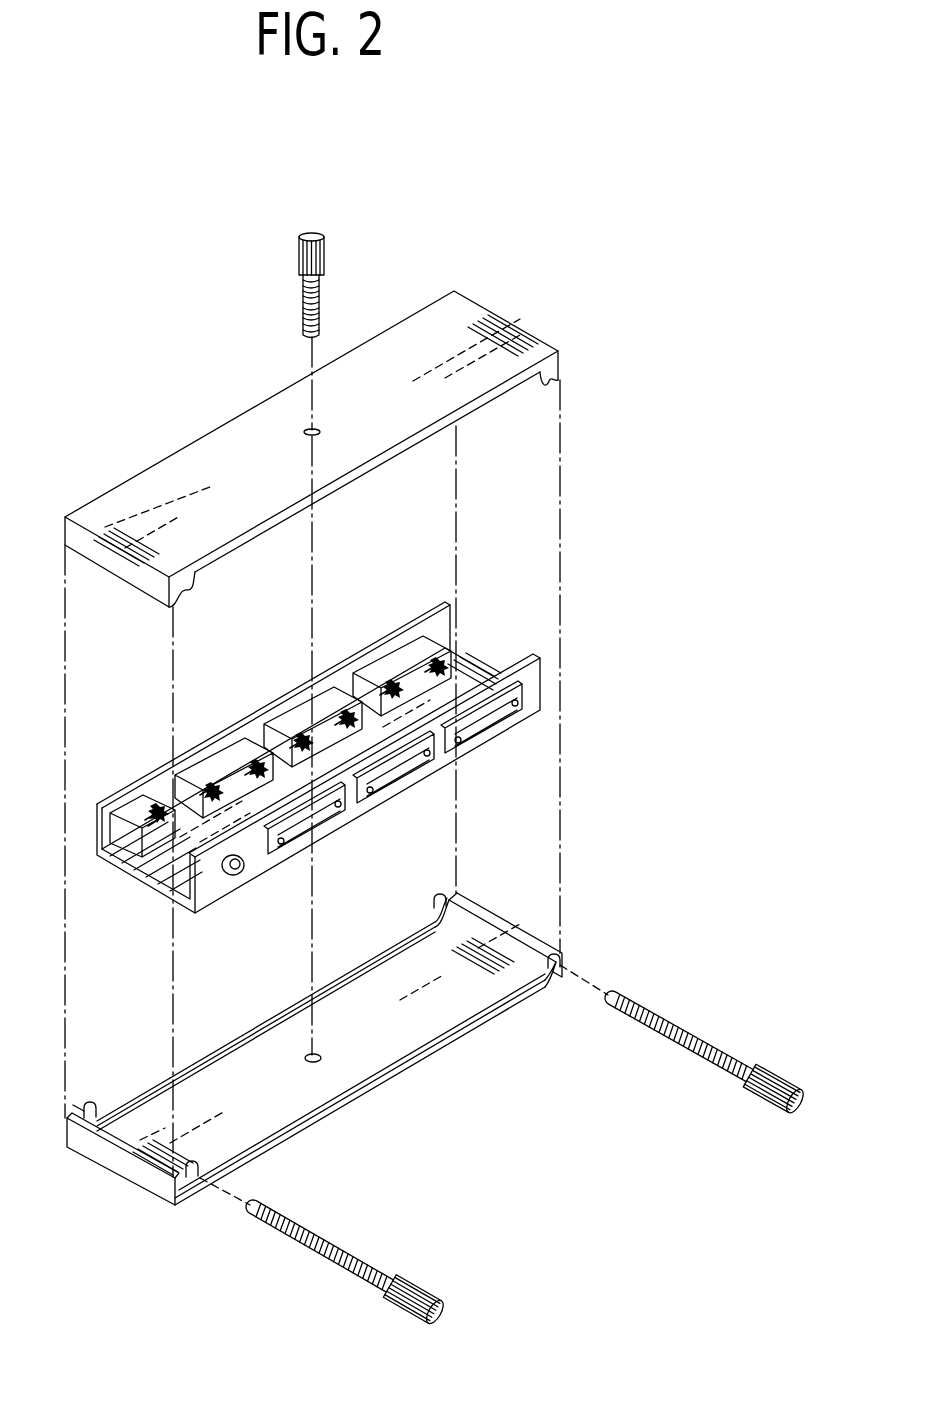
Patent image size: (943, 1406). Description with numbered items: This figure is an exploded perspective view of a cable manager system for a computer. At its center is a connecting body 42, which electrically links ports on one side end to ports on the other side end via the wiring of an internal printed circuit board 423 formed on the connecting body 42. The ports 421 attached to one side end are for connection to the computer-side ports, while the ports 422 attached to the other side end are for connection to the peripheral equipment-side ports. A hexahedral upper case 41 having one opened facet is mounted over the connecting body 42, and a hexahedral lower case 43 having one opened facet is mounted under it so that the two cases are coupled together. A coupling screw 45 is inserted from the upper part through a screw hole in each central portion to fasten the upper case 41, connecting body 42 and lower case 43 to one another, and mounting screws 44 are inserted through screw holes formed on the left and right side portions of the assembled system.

The upper case 41 is at (222, 444).
The connecting body 42 is at (362, 751).
The ports for being connected with the computer-side port 421 is at (383, 653).
The ports for being connected with the peripheral equipment-side port 422 is at (315, 838).
The printed circuit board 423 is at (475, 669).
The lower case 43 is at (415, 1048).
The mounting screws 44 is at (423, 1292).
The coupling screw 45 is at (299, 258).